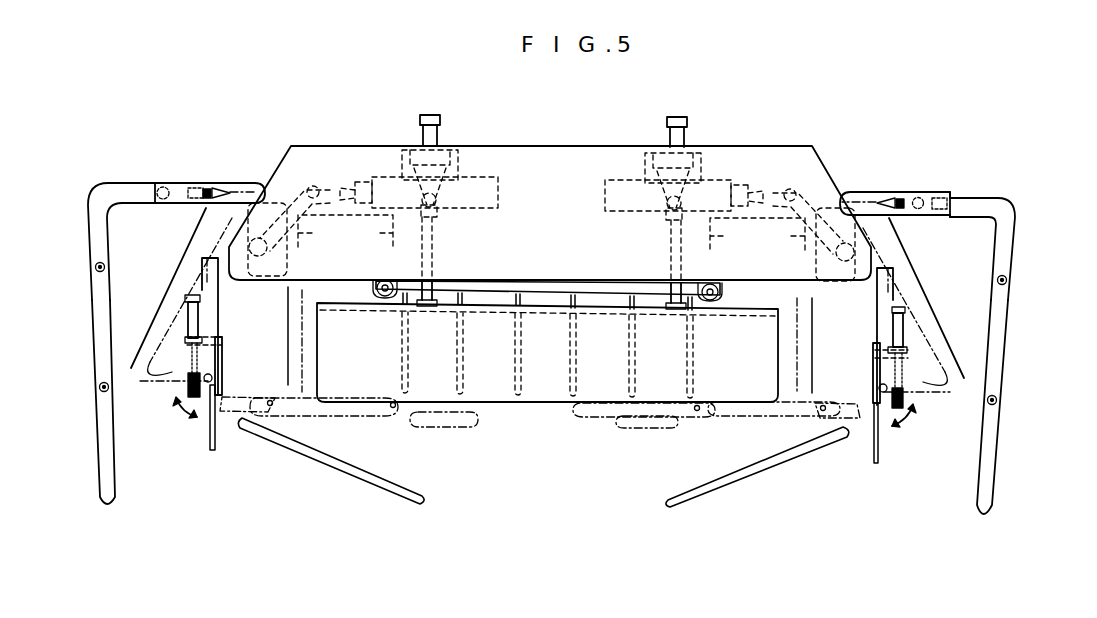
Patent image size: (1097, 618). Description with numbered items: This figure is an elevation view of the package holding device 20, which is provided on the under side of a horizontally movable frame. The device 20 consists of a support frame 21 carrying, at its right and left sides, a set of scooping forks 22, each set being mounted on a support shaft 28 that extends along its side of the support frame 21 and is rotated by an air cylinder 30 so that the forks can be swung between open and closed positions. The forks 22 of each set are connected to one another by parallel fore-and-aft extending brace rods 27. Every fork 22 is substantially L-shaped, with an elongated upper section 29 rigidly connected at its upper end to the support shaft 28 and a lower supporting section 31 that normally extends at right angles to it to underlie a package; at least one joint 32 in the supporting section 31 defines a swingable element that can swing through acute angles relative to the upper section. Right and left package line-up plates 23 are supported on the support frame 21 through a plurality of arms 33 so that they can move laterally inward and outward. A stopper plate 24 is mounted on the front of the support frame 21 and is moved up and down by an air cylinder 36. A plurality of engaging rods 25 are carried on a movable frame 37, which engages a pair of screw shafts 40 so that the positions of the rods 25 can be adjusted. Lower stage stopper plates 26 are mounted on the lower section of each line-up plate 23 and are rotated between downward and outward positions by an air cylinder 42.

The package holding device 20 is at (316, 104).
The support frame 21 is at (555, 146).
The scooping forks 22 is at (88, 211).
The package line-up plates 23 is at (222, 356).
The stopper plate 24 is at (547, 404).
The engaging rods 25 is at (452, 346).
The lower stage stopper plates 26 is at (216, 438).
The brace rods 27 is at (191, 186).
The support shaft 28 is at (257, 257).
The upper section 29 is at (239, 183).
The air cylinder 30 is at (466, 212).
The supporting section 31 is at (95, 329).
The joint 32 is at (95, 268).
The arms 33 is at (200, 284).
The air cylinder 36 is at (430, 112).
The movable frame 37 is at (553, 281).
The screw shafts 40 is at (376, 290).
The air cylinder 42 is at (191, 326).